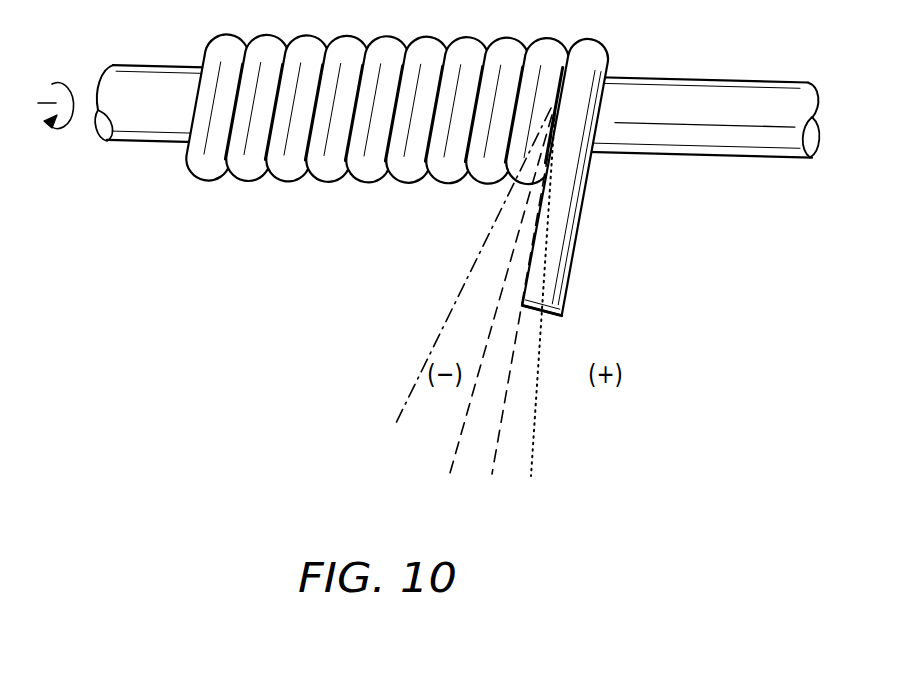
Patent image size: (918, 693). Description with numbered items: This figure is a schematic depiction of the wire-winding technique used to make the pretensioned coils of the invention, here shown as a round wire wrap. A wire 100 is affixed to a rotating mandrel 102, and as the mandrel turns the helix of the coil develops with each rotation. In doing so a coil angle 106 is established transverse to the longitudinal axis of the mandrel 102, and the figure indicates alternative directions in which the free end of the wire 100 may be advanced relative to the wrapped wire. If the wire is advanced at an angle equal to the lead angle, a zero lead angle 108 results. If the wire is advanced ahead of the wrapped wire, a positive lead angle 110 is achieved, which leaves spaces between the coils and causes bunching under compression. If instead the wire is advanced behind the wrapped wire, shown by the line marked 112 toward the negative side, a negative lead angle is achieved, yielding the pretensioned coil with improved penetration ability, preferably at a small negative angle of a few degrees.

The wire 100 is at (222, 45).
The rotating mandrel 102 is at (192, 108).
The coil angle 106 is at (495, 461).
The zero lead angle 108 is at (450, 466).
The positive lead angle 110 is at (530, 462).
The tail maximum deflection line 112 is at (437, 343).